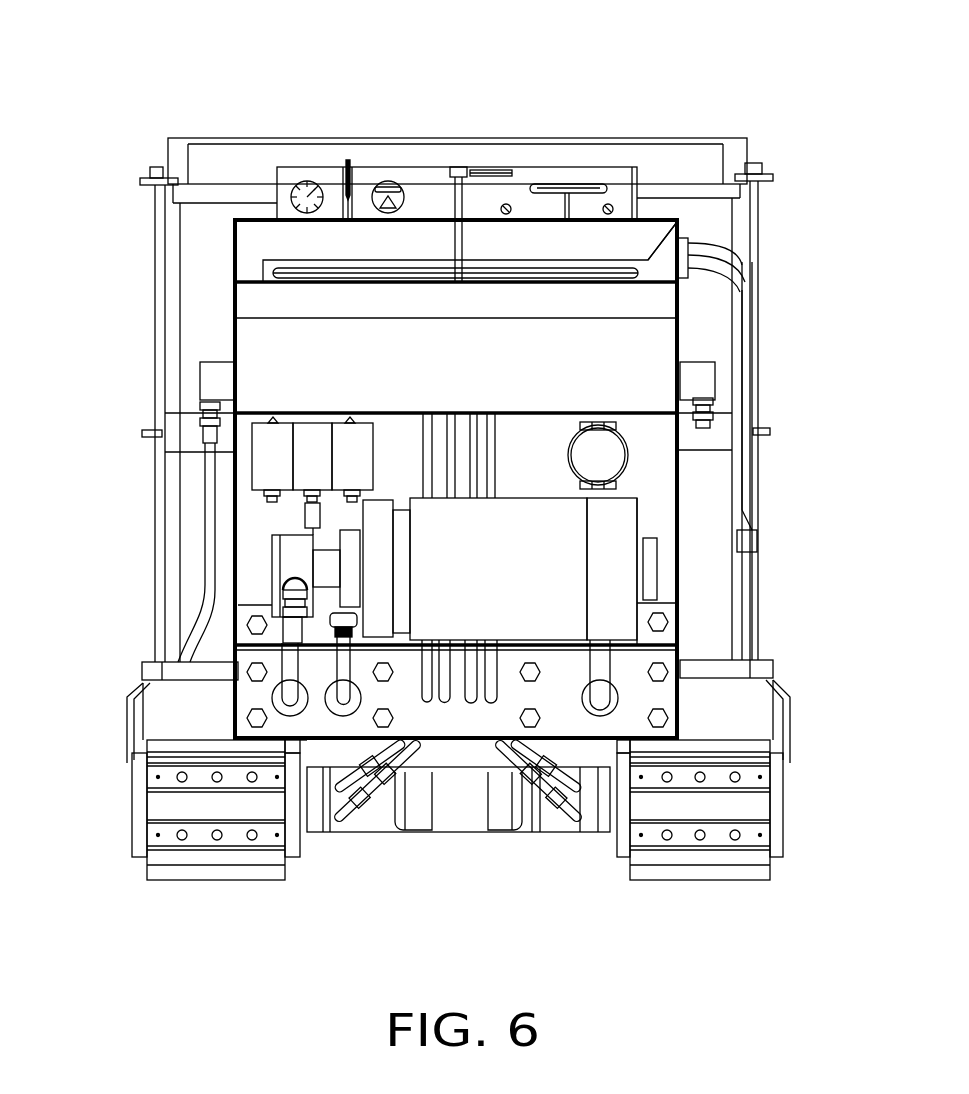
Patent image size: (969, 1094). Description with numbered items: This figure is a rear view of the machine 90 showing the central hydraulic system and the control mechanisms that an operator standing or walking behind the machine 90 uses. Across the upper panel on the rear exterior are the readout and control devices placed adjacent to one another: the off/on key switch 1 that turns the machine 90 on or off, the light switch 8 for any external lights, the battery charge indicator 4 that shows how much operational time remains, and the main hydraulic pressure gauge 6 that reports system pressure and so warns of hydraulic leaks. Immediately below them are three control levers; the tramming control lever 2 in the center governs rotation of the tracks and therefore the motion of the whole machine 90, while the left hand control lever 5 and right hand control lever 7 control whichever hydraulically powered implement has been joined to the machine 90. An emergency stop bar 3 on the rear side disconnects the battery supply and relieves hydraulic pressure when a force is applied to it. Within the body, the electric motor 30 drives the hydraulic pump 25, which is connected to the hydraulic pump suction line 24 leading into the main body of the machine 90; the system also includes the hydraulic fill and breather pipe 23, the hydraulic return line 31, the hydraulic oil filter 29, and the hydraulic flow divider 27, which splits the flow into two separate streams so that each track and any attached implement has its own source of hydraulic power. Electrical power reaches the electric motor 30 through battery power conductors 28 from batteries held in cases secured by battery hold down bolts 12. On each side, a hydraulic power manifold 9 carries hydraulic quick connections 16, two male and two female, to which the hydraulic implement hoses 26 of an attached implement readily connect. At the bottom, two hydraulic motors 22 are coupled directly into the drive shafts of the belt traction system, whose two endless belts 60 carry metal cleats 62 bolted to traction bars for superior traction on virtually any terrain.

The machine 90 is at (195, 118).
The off/on key switch 1 is at (507, 204).
The tramming control lever 2 is at (458, 175).
The emergency stop bar 3 is at (673, 238).
The battery charge indicator 4 is at (388, 180).
The left hand control lever 5 is at (348, 160).
The main hydraulic pressure gauge 6 is at (305, 180).
The right hand control lever 7 is at (567, 184).
The light switch 8 is at (608, 204).
The hydraulic power manifold 9 is at (215, 385).
The battery hold down bolt 12 is at (150, 178).
The hydraulic quick connection 16 is at (715, 412).
The hydraulic motor 22 is at (510, 827).
The hydraulic fill and breather pipe 23 is at (362, 698).
The hydraulic pump suction line 24 is at (287, 670).
The hydraulic pump 25 is at (280, 550).
The hydraulic implement hose 26 is at (205, 518).
The hydraulic flow divider 27 is at (262, 440).
The battery power conductor 28 is at (748, 318).
The hydraulic oil filter 29 is at (583, 452).
The electric motor 30 is at (572, 558).
The hydraulic return line 31 is at (603, 670).
The endless belt 60 is at (760, 802).
The metal cleat 62 is at (167, 837).